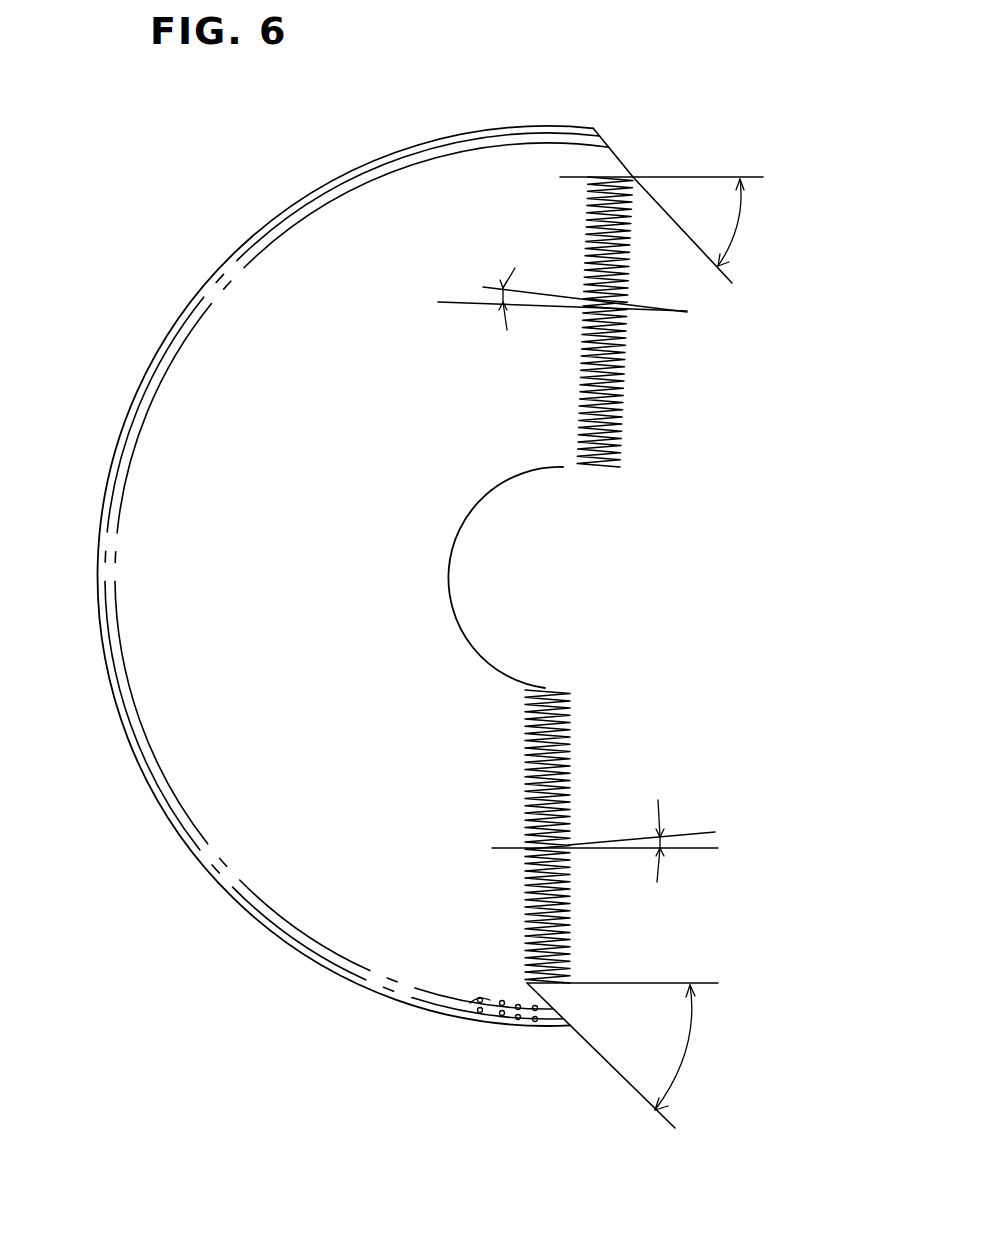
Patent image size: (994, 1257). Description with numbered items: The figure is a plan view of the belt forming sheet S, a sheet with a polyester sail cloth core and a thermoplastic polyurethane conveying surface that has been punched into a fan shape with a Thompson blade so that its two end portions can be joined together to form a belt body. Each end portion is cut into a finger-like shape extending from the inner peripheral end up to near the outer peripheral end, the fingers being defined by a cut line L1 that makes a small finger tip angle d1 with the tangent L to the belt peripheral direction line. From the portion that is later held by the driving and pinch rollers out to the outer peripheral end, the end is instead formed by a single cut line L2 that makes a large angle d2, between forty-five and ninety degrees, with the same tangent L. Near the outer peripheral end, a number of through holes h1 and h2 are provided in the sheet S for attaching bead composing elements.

The belt forming sheet S is at (243, 747).
The tangent to the belt peripheral direction line L is at (440, 301).
The cut line of the finger L1 is at (488, 287).
The single cut line L2 is at (722, 290).
The angle between the finger cut line and the tangent d1 is at (597, 564).
The angle between the single cut line and the tangent d2 is at (716, 644).
The through holes h1 is at (500, 1017).
The through holes h2 is at (452, 1012).